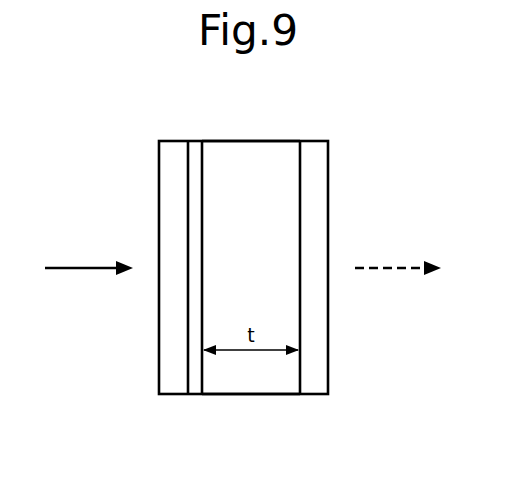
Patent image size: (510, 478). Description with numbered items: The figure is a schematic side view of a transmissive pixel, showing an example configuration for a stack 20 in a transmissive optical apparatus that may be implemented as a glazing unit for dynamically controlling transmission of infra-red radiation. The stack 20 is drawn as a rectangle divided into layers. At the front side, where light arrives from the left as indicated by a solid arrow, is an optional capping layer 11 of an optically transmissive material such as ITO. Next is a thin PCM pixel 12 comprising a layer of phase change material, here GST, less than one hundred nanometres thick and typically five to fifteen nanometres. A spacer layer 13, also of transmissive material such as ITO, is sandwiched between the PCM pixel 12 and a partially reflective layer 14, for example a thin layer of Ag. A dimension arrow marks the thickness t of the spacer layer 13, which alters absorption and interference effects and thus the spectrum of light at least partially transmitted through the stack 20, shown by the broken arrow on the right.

The capping layer 11 is at (177, 190).
The PCM pixel 12 is at (195, 165).
The spacer layer 13 is at (253, 165).
The reflective layer 14 is at (312, 197).
The stack 20 is at (328, 403).